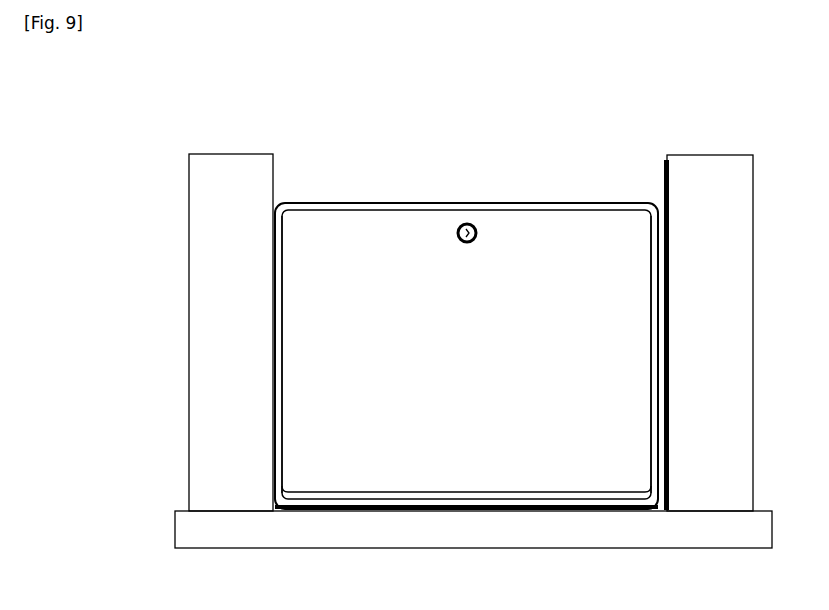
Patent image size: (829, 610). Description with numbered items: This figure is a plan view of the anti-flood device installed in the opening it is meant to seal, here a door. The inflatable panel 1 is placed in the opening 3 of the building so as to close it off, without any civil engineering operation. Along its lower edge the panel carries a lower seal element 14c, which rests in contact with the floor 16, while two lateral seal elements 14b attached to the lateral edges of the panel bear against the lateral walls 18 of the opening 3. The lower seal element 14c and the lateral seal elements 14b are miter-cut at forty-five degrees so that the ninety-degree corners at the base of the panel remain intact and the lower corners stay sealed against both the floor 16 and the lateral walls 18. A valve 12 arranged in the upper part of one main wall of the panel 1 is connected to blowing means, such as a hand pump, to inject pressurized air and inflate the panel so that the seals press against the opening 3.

The inflatable panel 1 is at (452, 183).
The opening 3 is at (299, 181).
The valve 12 is at (473, 242).
The lateral seal element 14b is at (280, 343).
The lower seal element 14c is at (400, 502).
The floor 16 is at (603, 548).
The lateral walls 18 is at (188, 353).